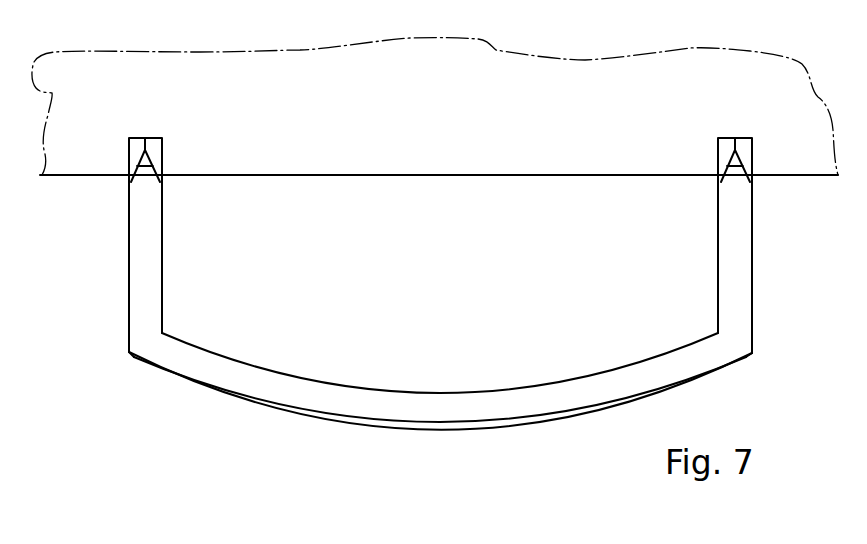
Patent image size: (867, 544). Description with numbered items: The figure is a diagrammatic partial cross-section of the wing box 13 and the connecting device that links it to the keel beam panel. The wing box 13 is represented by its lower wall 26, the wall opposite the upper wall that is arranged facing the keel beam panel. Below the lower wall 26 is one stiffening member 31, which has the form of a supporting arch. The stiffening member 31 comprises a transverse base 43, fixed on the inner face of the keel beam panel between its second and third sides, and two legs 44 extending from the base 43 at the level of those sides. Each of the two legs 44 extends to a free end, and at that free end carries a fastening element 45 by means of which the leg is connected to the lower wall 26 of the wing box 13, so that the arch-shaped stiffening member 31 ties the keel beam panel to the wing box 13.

The wing box 13 is at (262, 62).
The lower wall 26 is at (327, 177).
The stiffening member 31 is at (537, 455).
The transverse base 43 is at (324, 392).
The legs 44 is at (142, 246).
The fastening element 45 is at (153, 149).